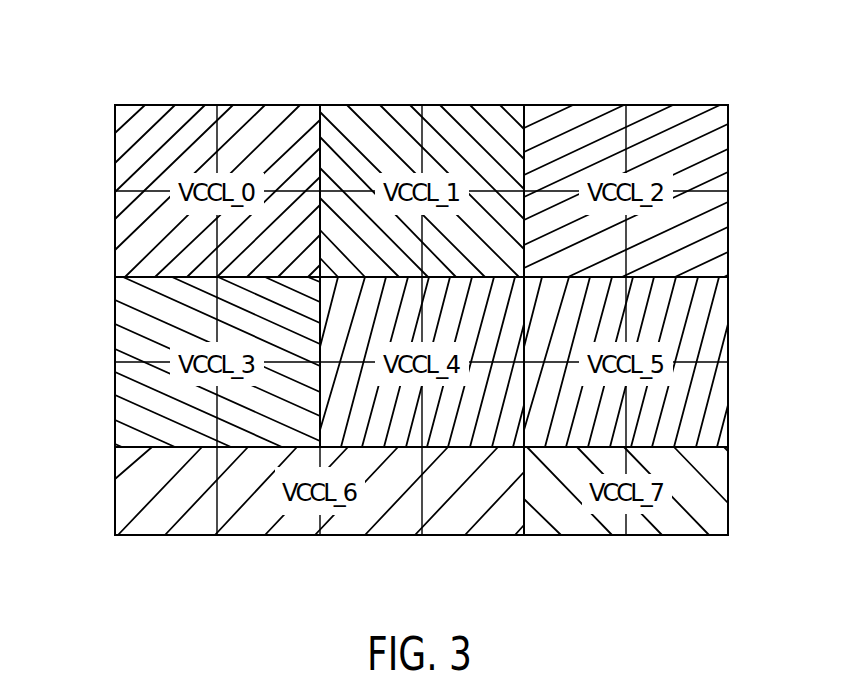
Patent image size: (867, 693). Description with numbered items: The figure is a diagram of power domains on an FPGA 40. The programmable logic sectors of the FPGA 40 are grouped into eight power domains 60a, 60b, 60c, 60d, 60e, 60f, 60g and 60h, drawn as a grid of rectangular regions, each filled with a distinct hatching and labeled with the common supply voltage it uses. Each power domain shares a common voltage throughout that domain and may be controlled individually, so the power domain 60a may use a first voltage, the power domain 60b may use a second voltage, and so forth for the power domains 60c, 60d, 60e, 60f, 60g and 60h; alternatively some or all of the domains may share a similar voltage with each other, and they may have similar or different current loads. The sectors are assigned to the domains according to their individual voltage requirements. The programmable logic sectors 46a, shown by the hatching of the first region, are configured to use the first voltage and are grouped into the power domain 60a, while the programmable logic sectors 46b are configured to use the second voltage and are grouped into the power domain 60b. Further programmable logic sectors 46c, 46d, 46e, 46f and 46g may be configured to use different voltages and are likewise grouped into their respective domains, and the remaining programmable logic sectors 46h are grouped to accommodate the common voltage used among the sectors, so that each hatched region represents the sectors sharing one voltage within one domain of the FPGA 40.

The FPGA 40 is at (133, 60).
The power domain 60a is at (243, 97).
The power domain 60b is at (362, 97).
The power domain 60c is at (546, 97).
The power domain 60d is at (107, 410).
The power domain 60e is at (468, 462).
The power domain 60f is at (736, 412).
The power domain 60g is at (132, 545).
The power domain 60h is at (711, 544).
The programmable logic sectors 46a is at (137, 218).
The programmable logic sectors 46b is at (450, 131).
The programmable logic sectors 46c is at (653, 131).
The programmable logic sectors 46d is at (137, 390).
The programmable logic sectors 46e is at (447, 425).
The programmable logic sectors 46f is at (708, 388).
The programmable logic sectors 46g is at (244, 518).
The programmable logic sectors 46h is at (654, 518).